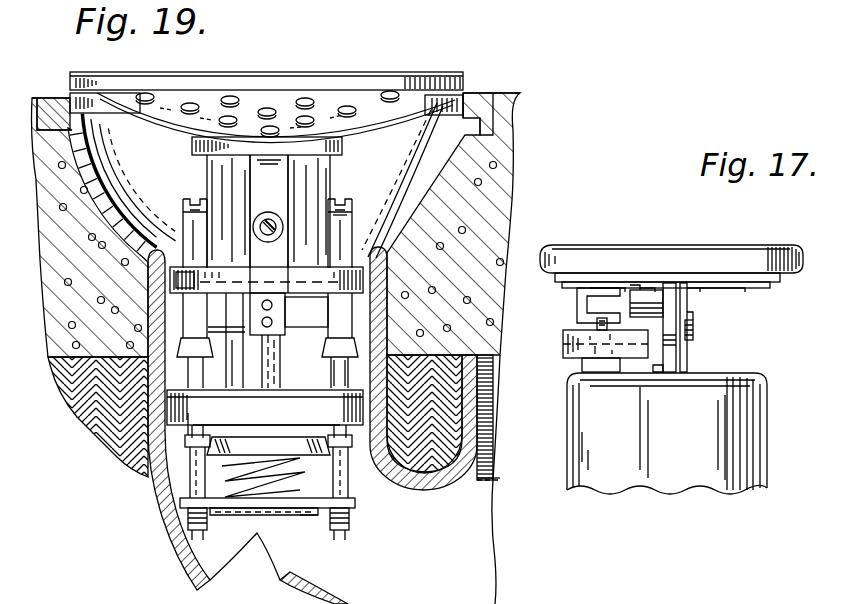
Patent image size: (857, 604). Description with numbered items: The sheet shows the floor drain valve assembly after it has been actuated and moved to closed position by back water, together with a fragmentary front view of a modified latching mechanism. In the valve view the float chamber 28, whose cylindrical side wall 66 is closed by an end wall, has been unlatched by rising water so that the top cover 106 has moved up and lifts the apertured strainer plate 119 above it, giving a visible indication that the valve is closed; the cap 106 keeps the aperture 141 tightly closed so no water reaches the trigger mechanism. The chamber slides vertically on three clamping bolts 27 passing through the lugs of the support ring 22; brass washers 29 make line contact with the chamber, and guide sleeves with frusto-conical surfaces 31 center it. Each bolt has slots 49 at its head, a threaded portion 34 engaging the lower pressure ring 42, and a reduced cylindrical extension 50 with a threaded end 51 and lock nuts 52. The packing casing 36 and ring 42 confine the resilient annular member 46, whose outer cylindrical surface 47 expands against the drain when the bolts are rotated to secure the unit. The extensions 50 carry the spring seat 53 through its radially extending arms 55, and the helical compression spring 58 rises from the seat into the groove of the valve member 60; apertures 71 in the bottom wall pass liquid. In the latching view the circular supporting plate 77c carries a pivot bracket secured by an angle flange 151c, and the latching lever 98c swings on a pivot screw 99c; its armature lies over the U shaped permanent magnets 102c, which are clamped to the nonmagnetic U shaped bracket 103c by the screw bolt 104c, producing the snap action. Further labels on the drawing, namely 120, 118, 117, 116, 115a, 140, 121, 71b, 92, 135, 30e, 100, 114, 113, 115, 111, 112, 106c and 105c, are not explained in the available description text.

In FIG. 19, the apertured strainer plate 119 is at (361, 79).
In FIG. 19, the perforations 120 is at (218, 97).
In FIG. 19, the flange 118 is at (466, 94).
In FIG. 19, the housing rim 117 is at (512, 93).
In FIG. 19, the housing top 116 is at (524, 92).
In FIG. 19, the ring 115a is at (93, 170).
In FIG. 19, the top cover 106 is at (341, 137).
In FIG. 19, the side wall 66 is at (323, 167).
In FIG. 19, the float chamber 28 is at (323, 177).
In FIG. 19, the slots 49 is at (204, 200).
In FIG. 19, the center panel 140 is at (279, 198).
In FIG. 19, the brass washers 29 is at (347, 217).
In FIG. 19, the aperture 141 is at (267, 243).
In FIG. 19, the housing mass 121 is at (168, 305).
In FIG. 19, the frusto-conical surface 31 is at (186, 335).
In FIG. 19, the apertures 71 is at (228, 350).
In FIG. 19, the rod branch 71b is at (229, 372).
In FIG. 19, the support ring 22 is at (317, 278).
In FIG. 19, the rod 92 is at (276, 342).
In FIG. 19, the center rod 135 is at (272, 358).
In FIG. 19, the rod end 30e is at (340, 376).
In FIG. 19, the right housing mass 100 is at (479, 333).
In FIG. 19, the housing layer 114 is at (488, 337).
In FIG. 19, the outer wall 113 is at (487, 447).
In FIG. 19, the wall bottom 115 is at (483, 482).
In FIG. 19, the casing wall 111 is at (163, 524).
In FIG. 19, the casing bottom 112 is at (410, 602).
In FIG. 19, the outer cylindrical surface 47 is at (248, 414).
In FIG. 19, the packing casing 36 is at (297, 391).
In FIG. 19, the threaded portion 34 is at (190, 438).
In FIG. 19, the lower pressure ring 42 is at (193, 446).
In FIG. 19, the resilient annular member 46 is at (188, 416).
In FIG. 19, the reduced cylindrical extension 50 is at (196, 480).
In FIG. 19, the valve member 60 is at (297, 458).
In FIG. 19, the helical compression spring 58 is at (298, 481).
In FIG. 19, the lock nuts 52 is at (213, 509).
In FIG. 19, the spring seat 53 is at (273, 515).
In FIG. 19, the radially extending arms 55 is at (317, 515).
In FIG. 19, the threaded end 51 is at (203, 522).
In FIG. 19, the clamping bolts 27 is at (197, 538).
In FIG. 17, the supporting plate 77c is at (718, 276).
In FIG. 17, the disc rim 106c is at (789, 237).
In FIG. 17, the latching lever 98c is at (668, 292).
In FIG. 17, the U shaped bracket 103c is at (580, 303).
In FIG. 17, the screw bolt 104c is at (602, 330).
In FIG. 17, the permanent magnets 102c is at (561, 347).
In FIG. 17, the angle flange 151c is at (697, 293).
In FIG. 17, the pivot screw 99c is at (694, 337).
In FIG. 17, the cup 105c is at (754, 377).